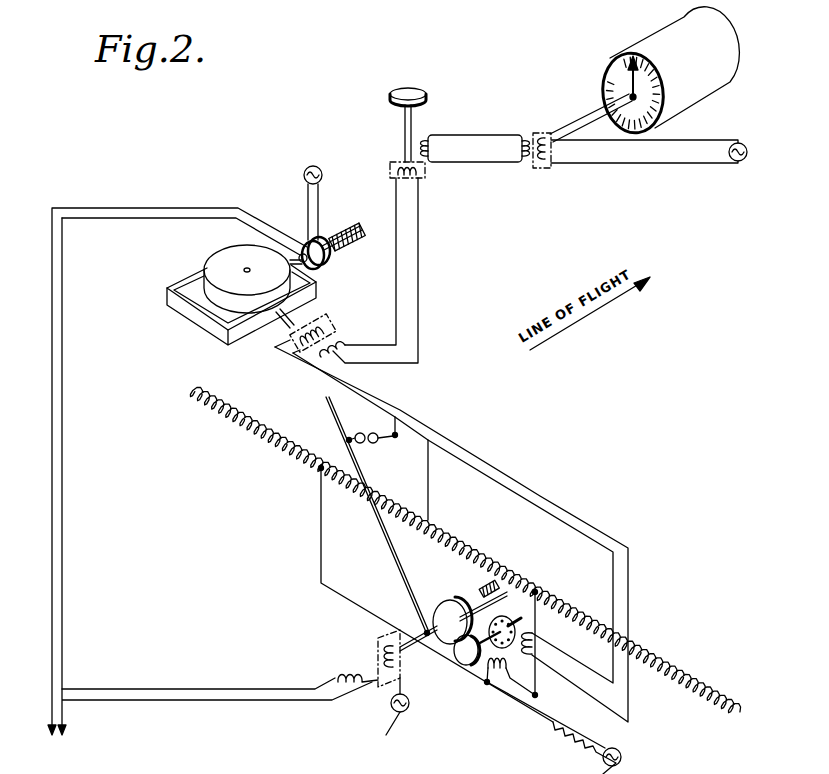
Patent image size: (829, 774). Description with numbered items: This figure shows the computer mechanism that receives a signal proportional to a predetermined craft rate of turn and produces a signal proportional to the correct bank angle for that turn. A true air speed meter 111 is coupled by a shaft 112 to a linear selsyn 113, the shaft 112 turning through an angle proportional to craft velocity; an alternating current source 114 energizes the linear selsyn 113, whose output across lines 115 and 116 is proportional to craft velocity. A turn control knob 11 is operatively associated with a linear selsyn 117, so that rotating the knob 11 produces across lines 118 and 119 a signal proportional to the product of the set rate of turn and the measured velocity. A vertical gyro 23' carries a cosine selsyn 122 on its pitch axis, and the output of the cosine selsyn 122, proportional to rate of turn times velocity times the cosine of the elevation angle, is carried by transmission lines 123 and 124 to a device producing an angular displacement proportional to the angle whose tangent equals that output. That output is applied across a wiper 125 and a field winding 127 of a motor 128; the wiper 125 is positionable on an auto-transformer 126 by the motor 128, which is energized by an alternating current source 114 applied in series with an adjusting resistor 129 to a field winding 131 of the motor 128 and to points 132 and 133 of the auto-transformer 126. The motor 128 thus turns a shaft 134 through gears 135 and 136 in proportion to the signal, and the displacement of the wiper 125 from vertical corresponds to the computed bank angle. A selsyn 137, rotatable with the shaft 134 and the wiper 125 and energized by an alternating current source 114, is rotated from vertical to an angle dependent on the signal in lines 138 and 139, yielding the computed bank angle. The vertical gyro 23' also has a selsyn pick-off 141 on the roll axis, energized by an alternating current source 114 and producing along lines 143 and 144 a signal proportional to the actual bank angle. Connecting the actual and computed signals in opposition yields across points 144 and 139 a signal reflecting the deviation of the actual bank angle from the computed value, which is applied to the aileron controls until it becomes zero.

The turn control knob 11 is at (398, 95).
The true air speed meter 111 is at (688, 106).
The shaft 112 is at (574, 123).
The linear selsyn 113 is at (546, 168).
The alternating current source 114 is at (313, 166).
The line 115 is at (478, 164).
The line 116 is at (470, 137).
The linear selsyn 117 is at (388, 175).
The line 118 is at (397, 263).
The line 119 is at (420, 287).
The cosine selsyn 122 is at (340, 339).
The transmission line 123 is at (396, 414).
The transmission line 124 is at (440, 440).
The wiper 125 is at (326, 400).
The auto-transformer 126 is at (192, 392).
The field winding 127 is at (535, 650).
The motor 128 is at (528, 620).
The adjusting resistor 129 is at (560, 738).
The field winding 131 is at (495, 690).
The point 132 is at (537, 585).
The point 133 is at (320, 468).
The shaft 134 is at (466, 600).
The gear 135 is at (466, 664).
The gear 136 is at (436, 644).
The selsyn 137 is at (367, 657).
The line 138 is at (250, 689).
The line 139 is at (290, 700).
The selsyn pick-off 141 is at (325, 269).
The line 143 is at (200, 217).
The line 144 is at (160, 208).
The vertical gyro 23' is at (232, 303).